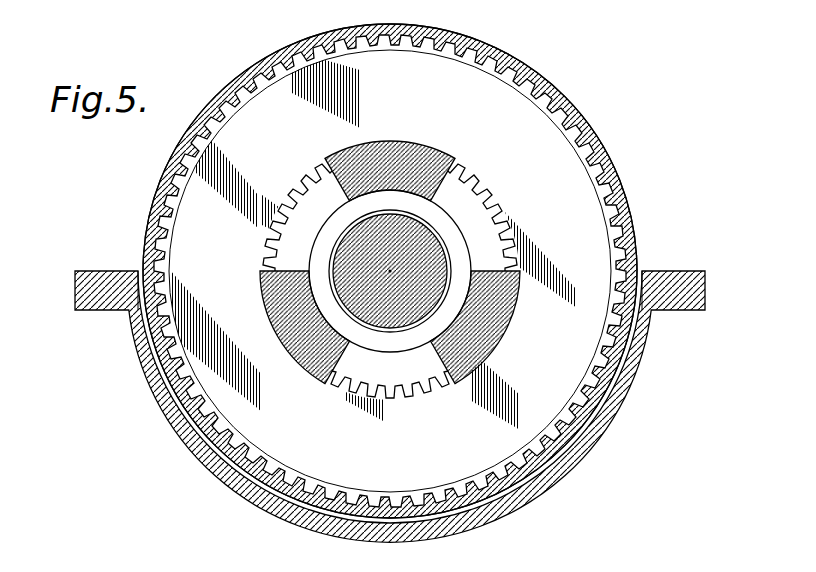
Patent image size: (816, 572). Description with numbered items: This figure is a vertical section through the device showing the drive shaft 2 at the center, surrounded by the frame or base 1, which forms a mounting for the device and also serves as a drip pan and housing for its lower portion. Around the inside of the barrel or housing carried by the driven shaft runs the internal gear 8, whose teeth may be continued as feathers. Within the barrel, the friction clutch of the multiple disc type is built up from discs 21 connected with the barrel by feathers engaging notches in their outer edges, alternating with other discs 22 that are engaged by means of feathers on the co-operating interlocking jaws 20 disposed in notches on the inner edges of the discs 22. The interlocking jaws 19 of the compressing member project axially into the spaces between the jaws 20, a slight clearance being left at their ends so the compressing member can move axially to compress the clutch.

The frame or base 1 is at (393, 0).
The drive shaft 2 is at (350, 296).
The internal gear 8 is at (535, 92).
The interlocking jaws 19 is at (412, 153).
The co-operating interlocking jaws 20 is at (458, 196).
The discs 21 is at (613, 184).
The discs 22 is at (390, 271).